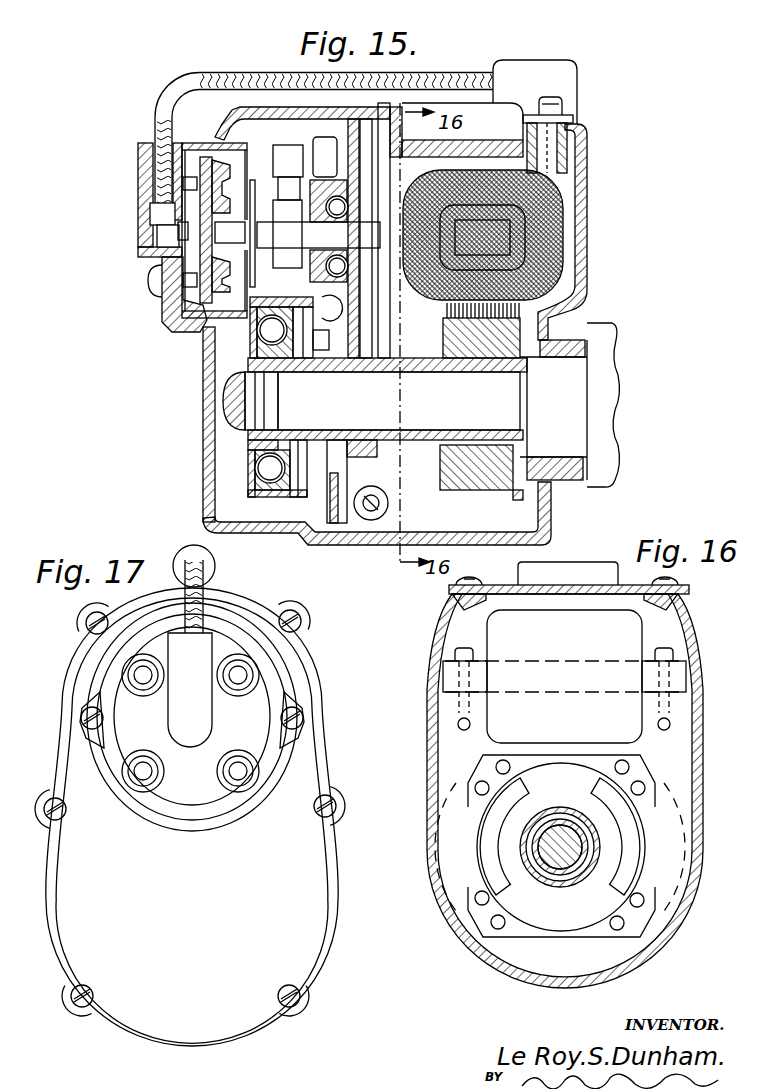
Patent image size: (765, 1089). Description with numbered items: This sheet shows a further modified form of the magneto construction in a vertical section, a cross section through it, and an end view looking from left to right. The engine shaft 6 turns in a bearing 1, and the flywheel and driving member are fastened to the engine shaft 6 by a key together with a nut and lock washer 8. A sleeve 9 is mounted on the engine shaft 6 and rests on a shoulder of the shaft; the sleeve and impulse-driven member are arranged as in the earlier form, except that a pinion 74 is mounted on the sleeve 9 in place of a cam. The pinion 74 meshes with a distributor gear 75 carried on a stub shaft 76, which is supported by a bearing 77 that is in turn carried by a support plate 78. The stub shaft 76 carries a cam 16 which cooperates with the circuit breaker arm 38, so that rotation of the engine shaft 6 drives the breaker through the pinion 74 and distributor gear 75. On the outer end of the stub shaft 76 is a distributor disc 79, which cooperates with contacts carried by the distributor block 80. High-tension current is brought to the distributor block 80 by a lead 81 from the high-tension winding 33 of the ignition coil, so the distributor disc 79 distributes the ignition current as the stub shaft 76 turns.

The bearing 1 is at (577, 412).
The engine shaft 6 is at (503, 413).
The nut and lock washer 8 is at (223, 417).
The sleeve 9 is at (433, 433).
The cam 16 is at (292, 257).
The high-tension winding 33 is at (560, 230).
The circuit breaker arm 38 is at (285, 162).
The pinion 74 is at (380, 463).
The distributor gear 75 is at (378, 108).
The stub shaft 76 is at (356, 233).
The bearing 77 is at (345, 275).
The support plate 78 is at (320, 343).
The distributor disc 79 is at (200, 328).
The distributor block 80 is at (140, 232).
The lead 81 is at (155, 122).